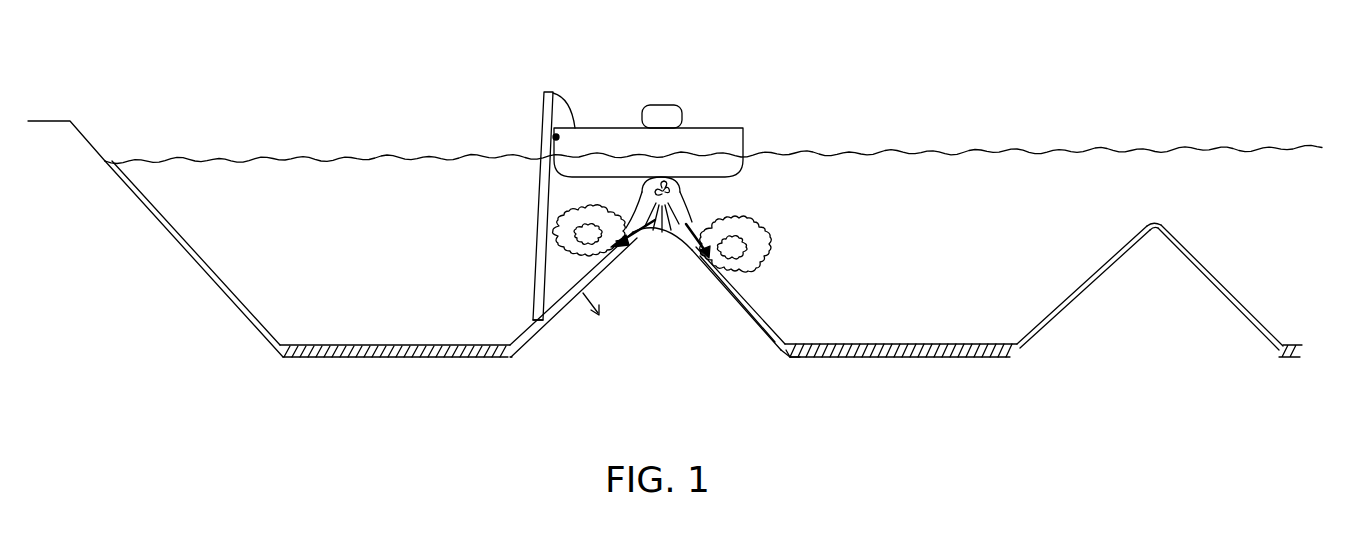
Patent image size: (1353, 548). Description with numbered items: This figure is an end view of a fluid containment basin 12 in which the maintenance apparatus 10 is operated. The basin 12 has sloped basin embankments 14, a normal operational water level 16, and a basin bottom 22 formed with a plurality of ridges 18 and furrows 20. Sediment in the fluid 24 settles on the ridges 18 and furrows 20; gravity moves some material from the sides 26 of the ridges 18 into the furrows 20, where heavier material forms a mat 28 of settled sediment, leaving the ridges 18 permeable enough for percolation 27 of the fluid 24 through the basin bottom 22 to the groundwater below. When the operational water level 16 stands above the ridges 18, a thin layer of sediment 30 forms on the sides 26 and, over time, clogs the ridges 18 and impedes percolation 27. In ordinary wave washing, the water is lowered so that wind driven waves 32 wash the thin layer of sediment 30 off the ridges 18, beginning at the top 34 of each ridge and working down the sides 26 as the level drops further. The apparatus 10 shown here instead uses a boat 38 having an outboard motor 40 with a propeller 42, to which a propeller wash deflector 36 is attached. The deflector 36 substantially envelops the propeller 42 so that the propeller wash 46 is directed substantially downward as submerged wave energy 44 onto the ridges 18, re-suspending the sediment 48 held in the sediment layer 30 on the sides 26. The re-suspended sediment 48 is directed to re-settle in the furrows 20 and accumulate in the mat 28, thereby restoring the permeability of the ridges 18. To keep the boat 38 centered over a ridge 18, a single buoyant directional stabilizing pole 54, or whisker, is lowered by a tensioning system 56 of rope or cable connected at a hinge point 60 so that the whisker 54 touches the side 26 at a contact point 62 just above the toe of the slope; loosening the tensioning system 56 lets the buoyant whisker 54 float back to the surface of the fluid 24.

The maintenance apparatus 10 is at (697, 189).
The fluid containment basin 12 is at (900, 100).
The sloped basin embankments 14 is at (80, 242).
The operational water level 16 is at (187, 158).
The ridges 18 is at (1143, 365).
The furrows 20 is at (417, 387).
The basin bottom 22 is at (788, 360).
The fluid 24 is at (913, 193).
The sides of ridges 26 is at (1077, 293).
The percolation 27 is at (723, 300).
The mat of settled sediment 28 is at (928, 352).
The thin layer of sediment 30 is at (753, 313).
The wind driven waves 32 is at (1073, 148).
The top of ridges 34 is at (1150, 228).
The propeller wash deflector 36 is at (628, 193).
The boat 38 is at (700, 133).
The outboard motor 40 is at (655, 104).
The propeller 42 is at (642, 186).
The submerged wave energy 44 is at (636, 248).
The propeller wash 46 is at (690, 213).
The re-suspended sediment 48 is at (755, 241).
The directional stabilizing pole 54 is at (544, 118).
The tensioning system 56 is at (558, 93).
The hinge point 60 is at (558, 137).
The contact point 62 is at (533, 319).